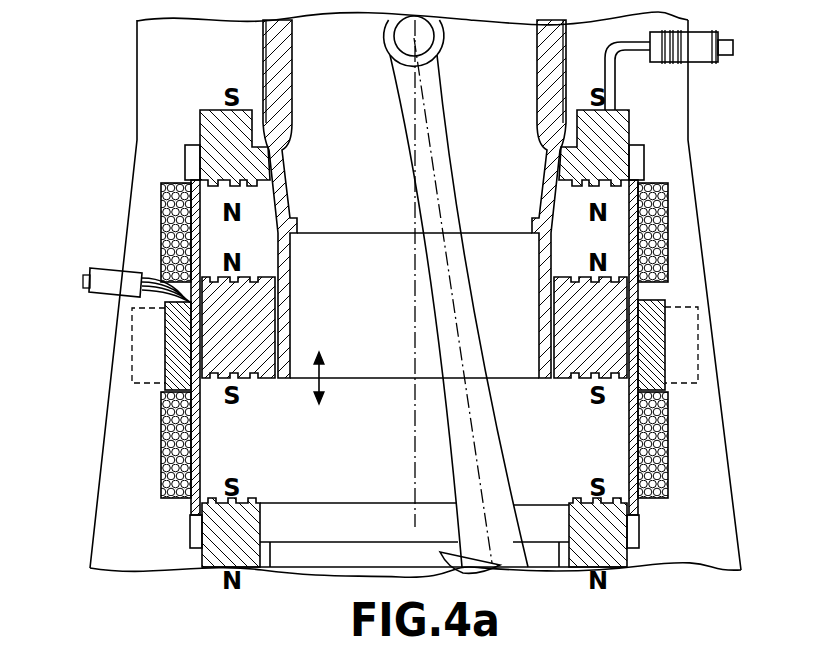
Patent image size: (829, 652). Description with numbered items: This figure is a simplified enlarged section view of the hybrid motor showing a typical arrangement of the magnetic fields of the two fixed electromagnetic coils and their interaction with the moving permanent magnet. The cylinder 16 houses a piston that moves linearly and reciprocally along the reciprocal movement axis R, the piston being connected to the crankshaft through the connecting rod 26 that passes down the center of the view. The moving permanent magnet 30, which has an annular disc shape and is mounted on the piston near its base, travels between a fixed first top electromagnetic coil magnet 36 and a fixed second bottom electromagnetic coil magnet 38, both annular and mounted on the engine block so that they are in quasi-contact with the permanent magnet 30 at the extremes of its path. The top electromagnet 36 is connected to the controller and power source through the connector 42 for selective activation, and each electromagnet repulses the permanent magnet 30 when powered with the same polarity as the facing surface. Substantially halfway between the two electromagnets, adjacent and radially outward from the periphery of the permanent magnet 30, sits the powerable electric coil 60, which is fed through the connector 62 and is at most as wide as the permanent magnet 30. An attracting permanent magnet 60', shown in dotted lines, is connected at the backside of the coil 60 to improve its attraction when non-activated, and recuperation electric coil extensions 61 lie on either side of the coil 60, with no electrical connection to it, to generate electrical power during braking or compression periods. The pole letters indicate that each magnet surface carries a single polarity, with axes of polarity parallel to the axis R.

The cylinder 16 is at (287, 40).
The connecting rod 26 is at (432, 254).
The moving permanent magnet 30 is at (257, 353).
The first top electromagnetic coil magnet 36 is at (203, 108).
The second bottom electromagnetic coil magnet 38 is at (190, 537).
The connector 42 is at (702, 56).
The powerable electric coil 60 is at (128, 346).
The attracting permanent magnet 60' is at (96, 345).
The recuperation electric coil extensions 61 is at (162, 207).
The connector 62 is at (112, 268).
The reciprocal movement axis R is at (410, 470).